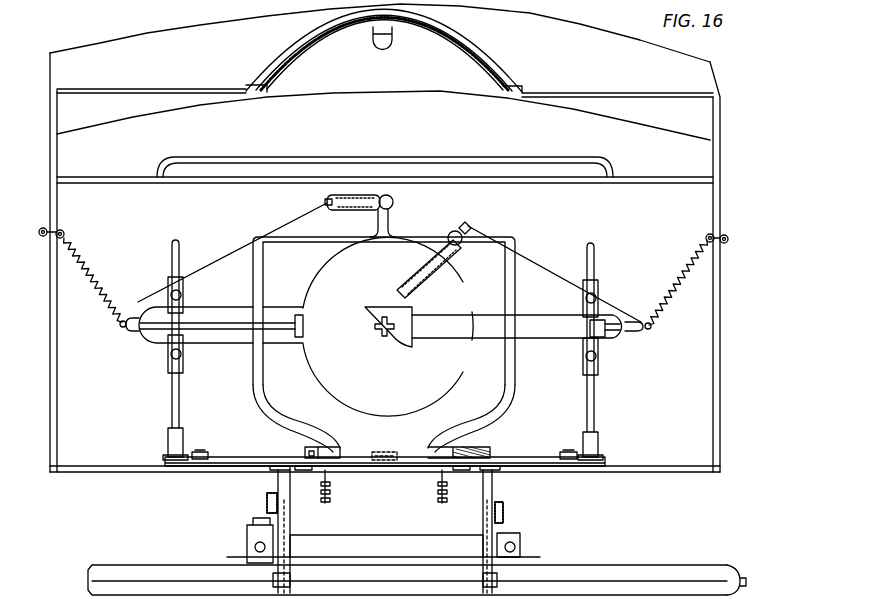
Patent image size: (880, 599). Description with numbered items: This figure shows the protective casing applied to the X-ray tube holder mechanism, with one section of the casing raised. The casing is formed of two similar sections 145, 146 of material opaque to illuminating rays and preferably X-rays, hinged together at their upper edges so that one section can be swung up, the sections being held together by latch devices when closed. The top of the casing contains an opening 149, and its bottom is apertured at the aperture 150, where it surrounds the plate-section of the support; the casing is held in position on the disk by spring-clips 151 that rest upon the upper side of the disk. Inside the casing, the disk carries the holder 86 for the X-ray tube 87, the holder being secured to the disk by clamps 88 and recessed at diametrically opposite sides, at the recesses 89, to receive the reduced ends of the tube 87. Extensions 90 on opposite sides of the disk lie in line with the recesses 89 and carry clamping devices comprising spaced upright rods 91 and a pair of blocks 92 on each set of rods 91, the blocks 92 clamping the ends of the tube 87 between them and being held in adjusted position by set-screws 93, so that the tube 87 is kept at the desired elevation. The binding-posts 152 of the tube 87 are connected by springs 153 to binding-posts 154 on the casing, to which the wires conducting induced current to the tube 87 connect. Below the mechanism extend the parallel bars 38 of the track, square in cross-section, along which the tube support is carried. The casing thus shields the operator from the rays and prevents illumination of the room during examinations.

The parallel bars 38 is at (598, 572).
The holder 86 is at (500, 413).
The X-ray tube 87 is at (443, 367).
The clamps 88 is at (307, 447).
The recesses 89 is at (255, 368).
The extensions 90 is at (170, 438).
The upright rods 91 is at (595, 423).
The blocks 92 is at (597, 288).
The set-screws 93 is at (585, 297).
The casing section 145 is at (717, 200).
The casing section 146 is at (716, 127).
The opening 149 is at (548, 172).
The aperture 150 is at (447, 45).
The spring-clips 151 is at (382, 47).
The binding-posts 152 is at (122, 328).
The springs 153 is at (98, 282).
The binding-posts 154 is at (60, 233).